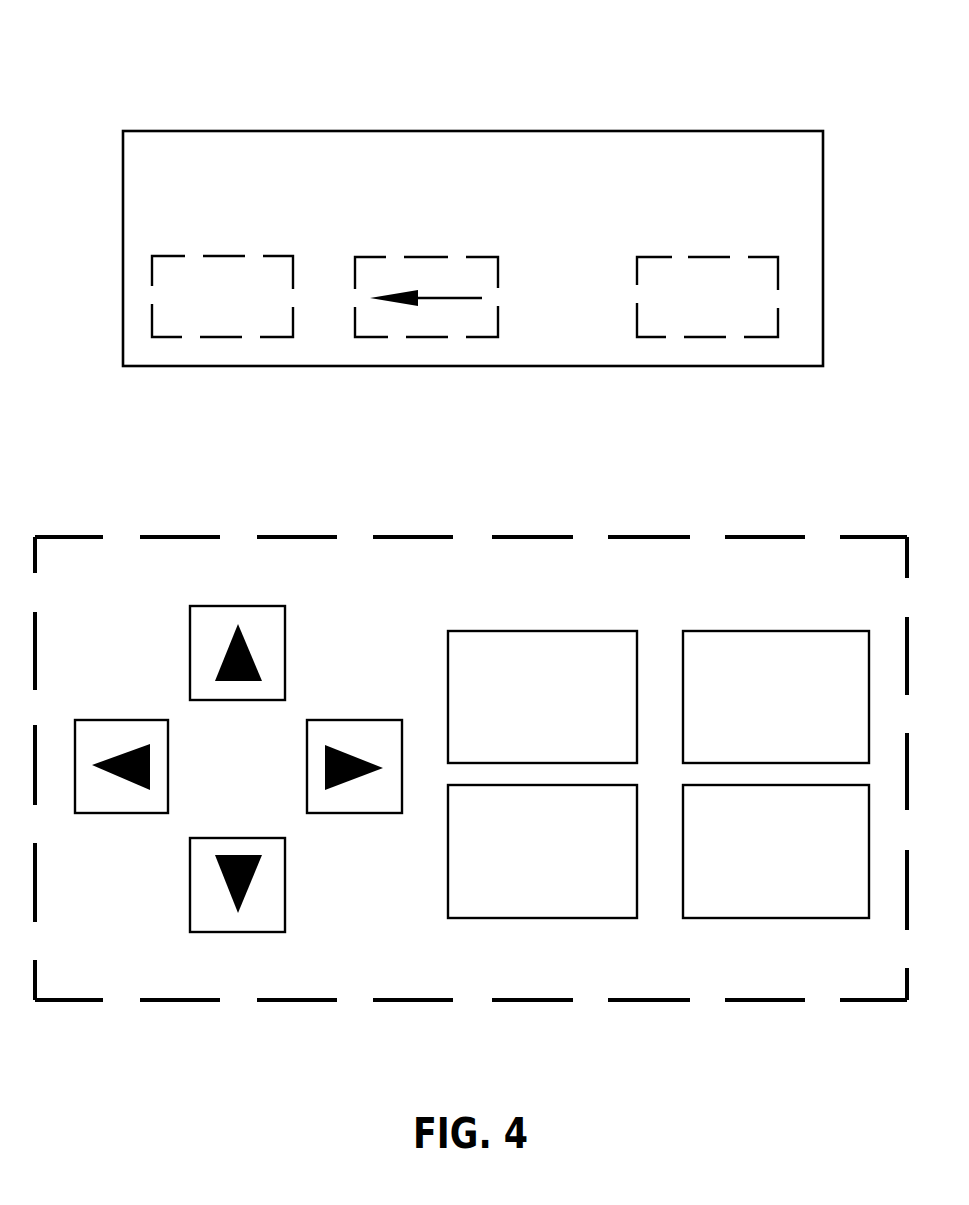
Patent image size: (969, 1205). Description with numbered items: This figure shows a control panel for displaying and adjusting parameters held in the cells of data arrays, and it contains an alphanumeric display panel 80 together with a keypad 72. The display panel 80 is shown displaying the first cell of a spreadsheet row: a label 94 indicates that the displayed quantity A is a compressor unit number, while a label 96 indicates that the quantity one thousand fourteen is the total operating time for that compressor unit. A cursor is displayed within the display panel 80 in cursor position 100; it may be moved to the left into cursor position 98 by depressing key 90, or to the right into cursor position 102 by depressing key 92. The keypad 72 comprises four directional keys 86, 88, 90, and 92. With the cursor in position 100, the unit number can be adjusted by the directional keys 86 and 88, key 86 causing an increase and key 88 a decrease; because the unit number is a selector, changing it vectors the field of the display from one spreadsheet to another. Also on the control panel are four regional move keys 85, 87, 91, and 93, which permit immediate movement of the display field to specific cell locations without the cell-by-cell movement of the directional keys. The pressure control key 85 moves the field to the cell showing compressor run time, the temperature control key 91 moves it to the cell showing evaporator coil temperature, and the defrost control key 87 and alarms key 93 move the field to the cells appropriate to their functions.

The keypad 72 is at (575, 540).
The alphanumeric display panel 80 is at (537, 368).
The pressure control regional move key 85 is at (558, 630).
The directional key 86 is at (233, 605).
The defrost control regional move key 87 is at (557, 920).
The directional key 88 is at (232, 934).
The directional key 90 is at (120, 718).
The temperature control regional move key 91 is at (763, 630).
The directional key 92 is at (338, 720).
The alarms regional move key 93 is at (762, 920).
The label 94 is at (490, 100).
The label 96 is at (810, 101).
The cursor position 98 is at (225, 338).
The cursor position 100 is at (420, 338).
The cursor position 102 is at (770, 340).